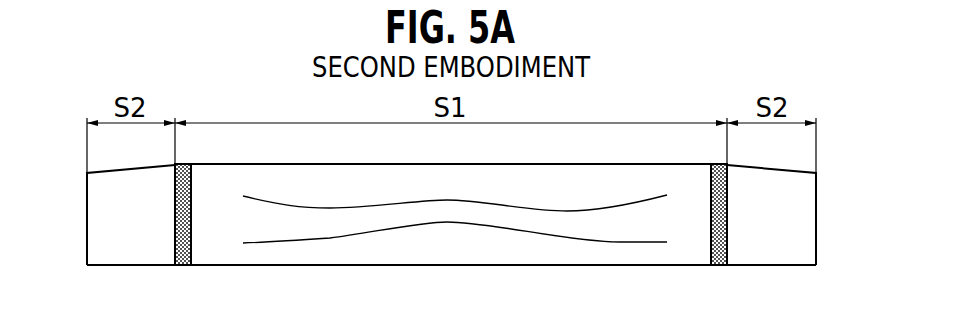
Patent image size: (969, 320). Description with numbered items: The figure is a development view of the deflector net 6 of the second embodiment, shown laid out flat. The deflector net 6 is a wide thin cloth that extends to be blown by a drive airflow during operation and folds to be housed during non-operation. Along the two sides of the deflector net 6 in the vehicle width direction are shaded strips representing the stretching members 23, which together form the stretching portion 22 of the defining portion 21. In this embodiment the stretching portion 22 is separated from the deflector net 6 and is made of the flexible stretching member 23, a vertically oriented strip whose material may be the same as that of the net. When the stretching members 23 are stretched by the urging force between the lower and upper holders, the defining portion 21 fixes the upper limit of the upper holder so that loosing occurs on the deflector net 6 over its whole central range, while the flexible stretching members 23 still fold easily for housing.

The deflector net 6 is at (322, 252).
The defining portion 21 is at (457, 235).
The stretching portion 22 is at (166, 226).
The stretching member 23 is at (182, 265).